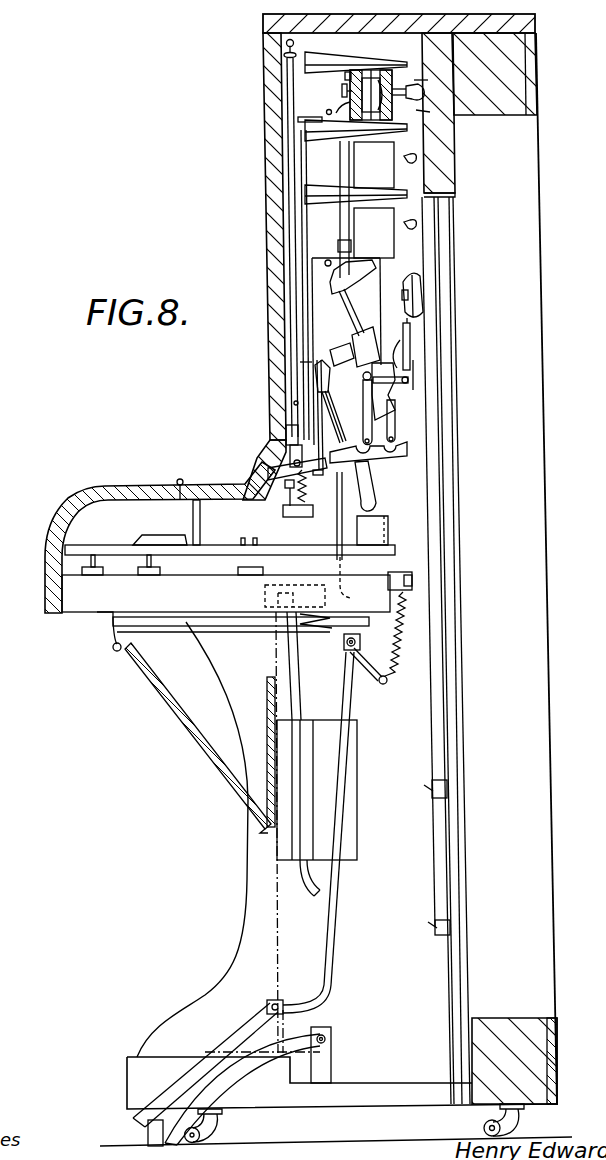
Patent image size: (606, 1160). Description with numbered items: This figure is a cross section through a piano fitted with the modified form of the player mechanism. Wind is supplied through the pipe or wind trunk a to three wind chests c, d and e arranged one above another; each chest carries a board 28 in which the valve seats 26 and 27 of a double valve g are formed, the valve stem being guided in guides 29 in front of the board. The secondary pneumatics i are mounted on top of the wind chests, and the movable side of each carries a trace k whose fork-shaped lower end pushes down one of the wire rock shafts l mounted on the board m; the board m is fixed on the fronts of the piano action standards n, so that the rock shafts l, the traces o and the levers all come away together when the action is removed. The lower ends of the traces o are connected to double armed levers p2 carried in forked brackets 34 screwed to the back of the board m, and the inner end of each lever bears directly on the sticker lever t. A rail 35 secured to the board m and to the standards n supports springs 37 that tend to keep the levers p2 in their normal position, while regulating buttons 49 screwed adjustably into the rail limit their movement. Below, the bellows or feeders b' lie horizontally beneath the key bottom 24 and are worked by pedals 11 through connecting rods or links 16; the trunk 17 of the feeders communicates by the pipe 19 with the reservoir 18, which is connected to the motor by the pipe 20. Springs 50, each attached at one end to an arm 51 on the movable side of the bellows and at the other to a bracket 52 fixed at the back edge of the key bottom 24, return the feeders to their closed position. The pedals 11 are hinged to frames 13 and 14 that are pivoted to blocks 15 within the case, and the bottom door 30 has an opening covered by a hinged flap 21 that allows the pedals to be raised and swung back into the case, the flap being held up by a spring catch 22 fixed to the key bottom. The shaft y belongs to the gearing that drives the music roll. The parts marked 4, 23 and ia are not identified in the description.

The pivot pin 4 is at (326, 113).
The pedals 11 is at (243, 1024).
The frame 13 is at (148, 1135).
The frame 14 is at (238, 1062).
The blocks 15 is at (331, 1052).
The connecting rods or links 16 is at (328, 918).
The trunk of the feeders 17 is at (266, 592).
The reservoir 18 is at (317, 790).
The pipe 19 is at (295, 664).
The pipe 20 is at (312, 893).
The flap 21 is at (180, 708).
The spring catch 22 is at (109, 641).
The case block 23 is at (426, 99).
The key bottom 24 is at (228, 575).
The valve seat 26 is at (412, 82).
The valve seat 27 is at (413, 112).
The board 28 is at (346, 72).
The guides 29 is at (342, 92).
The bottom door 30 is at (267, 699).
The forked brackets 34 is at (289, 452).
The rail 35 is at (298, 524).
The springs 37 is at (268, 470).
The regulating buttons 49 is at (287, 490).
The springs 50 is at (404, 634).
The arm 51 is at (362, 675).
The bracket 52 is at (408, 576).
The wind trunk or pipe a is at (348, 502).
The bellows or feeders b' is at (241, 634).
The wind chest c is at (392, 74).
The wind chest d is at (385, 165).
The wind chest e is at (385, 233).
The double valve g is at (376, 78).
The secondary pneumatics i is at (325, 63).
The rail ia is at (313, 137).
The trace k is at (290, 215).
The rock shafts l is at (300, 370).
The board m is at (301, 311).
The piano action standards n is at (355, 313).
The traces o is at (293, 403).
The double armed levers p2 is at (297, 488).
The sticker lever t is at (350, 462).
The shaft y is at (326, 260).